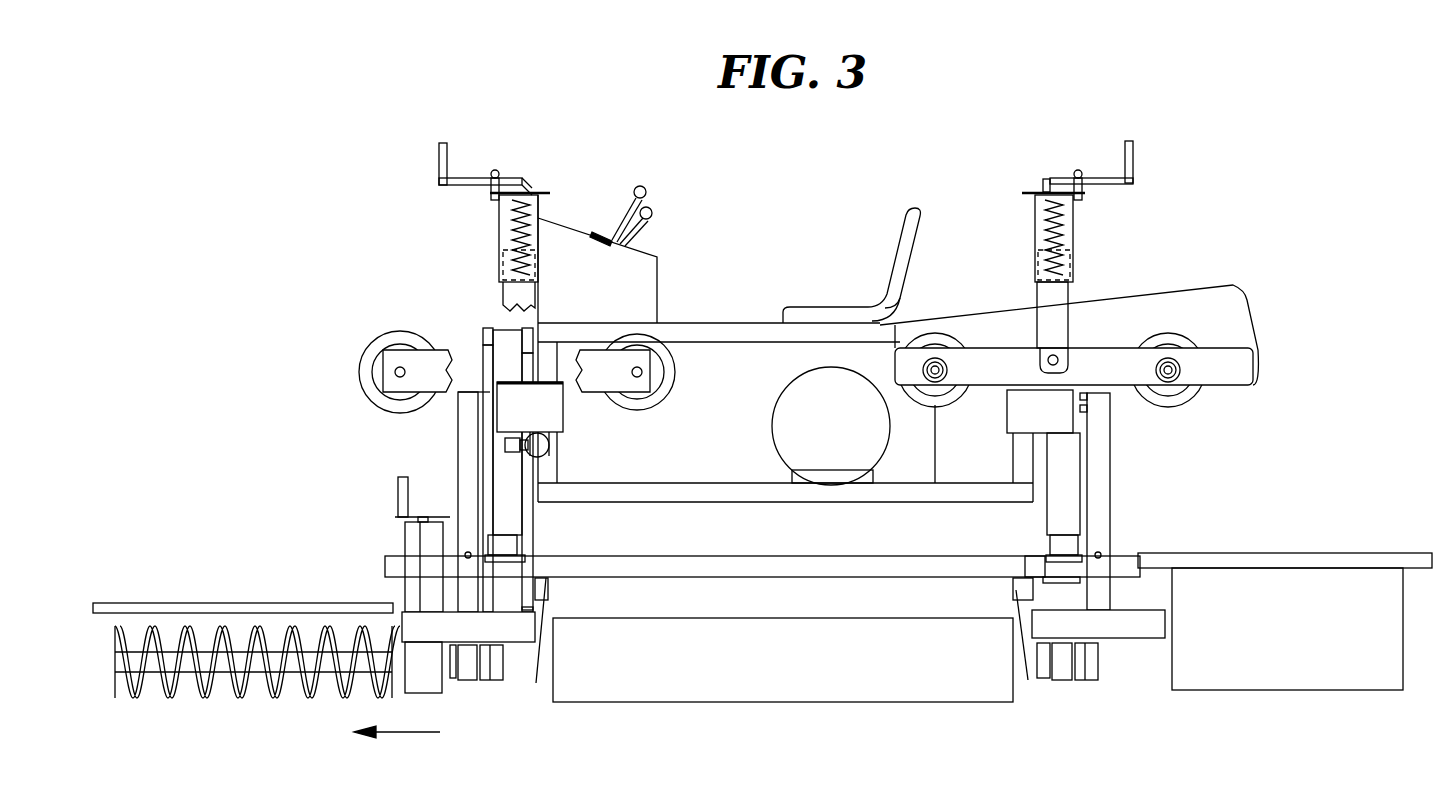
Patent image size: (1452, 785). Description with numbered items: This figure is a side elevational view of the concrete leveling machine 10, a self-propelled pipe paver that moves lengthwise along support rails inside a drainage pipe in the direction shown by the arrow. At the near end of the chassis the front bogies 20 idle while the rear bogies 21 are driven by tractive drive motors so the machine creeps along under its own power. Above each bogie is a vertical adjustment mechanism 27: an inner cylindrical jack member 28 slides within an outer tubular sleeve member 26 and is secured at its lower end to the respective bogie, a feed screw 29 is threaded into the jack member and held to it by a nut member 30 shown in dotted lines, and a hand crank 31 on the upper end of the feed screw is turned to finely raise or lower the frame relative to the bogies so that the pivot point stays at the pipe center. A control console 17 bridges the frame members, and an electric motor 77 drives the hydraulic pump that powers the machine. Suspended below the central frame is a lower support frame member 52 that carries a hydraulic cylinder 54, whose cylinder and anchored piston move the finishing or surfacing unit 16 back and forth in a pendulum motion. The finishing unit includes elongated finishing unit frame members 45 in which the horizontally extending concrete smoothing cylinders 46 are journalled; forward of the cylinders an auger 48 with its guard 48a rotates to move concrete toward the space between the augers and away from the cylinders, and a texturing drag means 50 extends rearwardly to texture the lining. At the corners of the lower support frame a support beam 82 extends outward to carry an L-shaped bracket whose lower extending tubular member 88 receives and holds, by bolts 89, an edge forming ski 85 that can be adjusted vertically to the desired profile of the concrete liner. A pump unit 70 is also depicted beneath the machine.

The concrete leveling machine 10 is at (440, 305).
The finishing or surfacing unit 16 is at (1138, 540).
The control console 17 is at (658, 257).
The front bogies 20 is at (395, 337).
The rear bogies 21 is at (1225, 373).
The outer tubular sleeve member 26 is at (540, 208).
The vertical adjustment mechanism 27 is at (478, 238).
The inner cylindrical jack member 28 is at (518, 298).
The feed screw 29 is at (532, 228).
The nut member 30 is at (500, 252).
The hand crank 31 is at (439, 165).
The finishing unit frame members 45 is at (735, 560).
The concrete smoothing cylinders 46 is at (783, 660).
The auger 48 is at (275, 698).
The guard 48a is at (183, 603).
The texturing drag means 50 is at (1287, 629).
The lower support frame member 52 is at (905, 490).
The hydraulic cylinder 54 is at (540, 447).
The hydraulic pump 70 is at (485, 680).
The electric motor 77 is at (831, 426).
The support beam 82 is at (1087, 403).
The edge forming ski 85 is at (505, 630).
The lower extending tubular member 88 is at (470, 480).
The bolts 89 is at (468, 553).